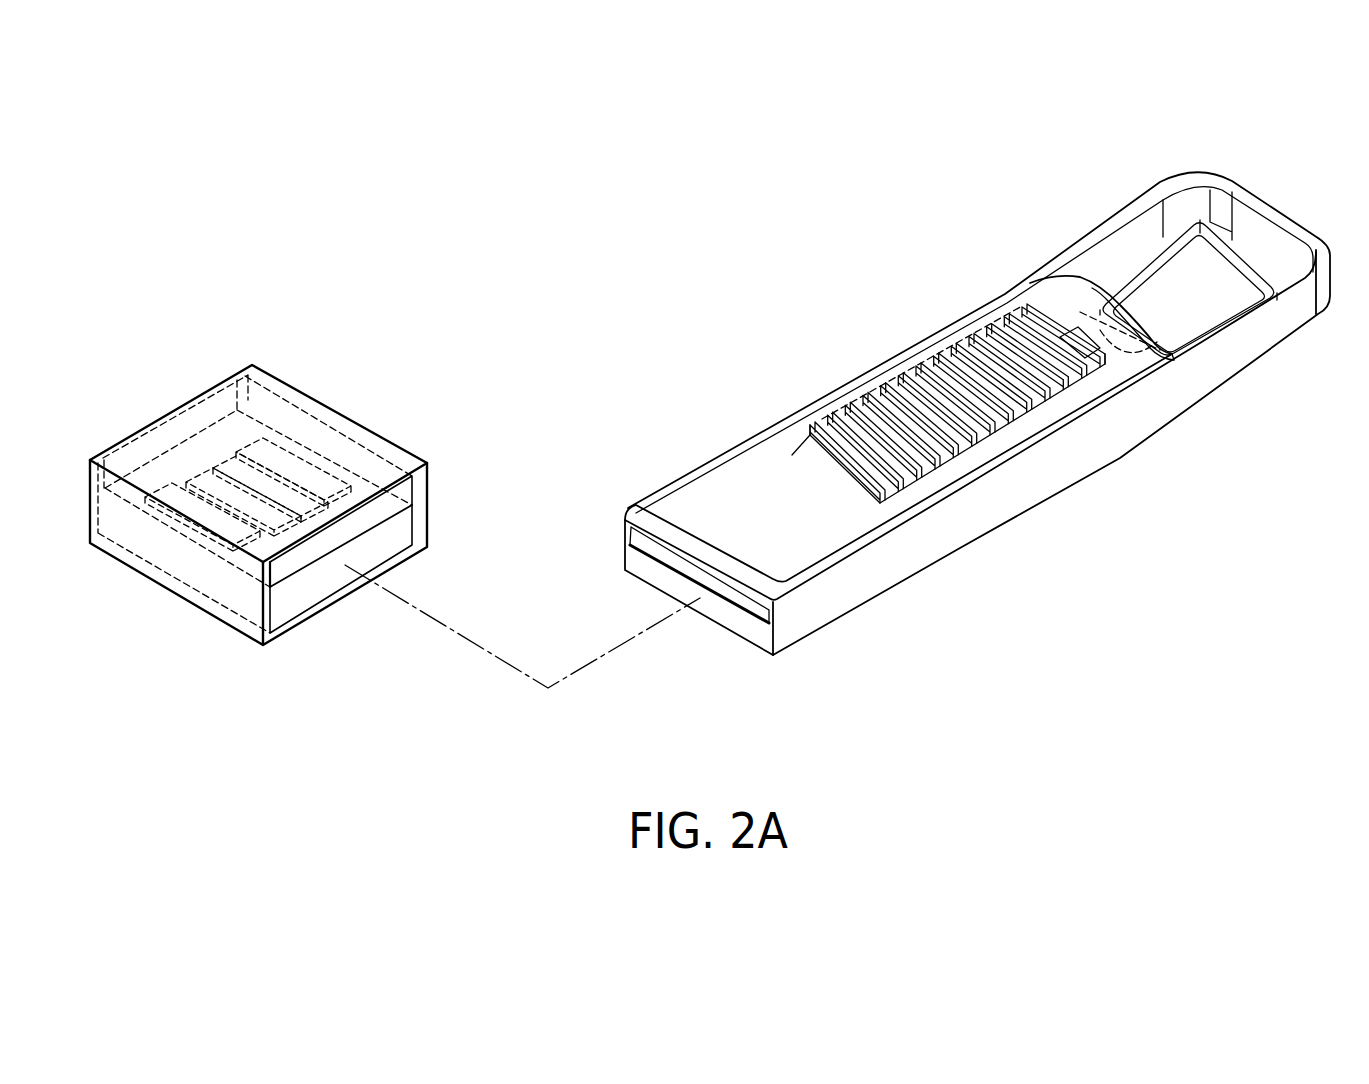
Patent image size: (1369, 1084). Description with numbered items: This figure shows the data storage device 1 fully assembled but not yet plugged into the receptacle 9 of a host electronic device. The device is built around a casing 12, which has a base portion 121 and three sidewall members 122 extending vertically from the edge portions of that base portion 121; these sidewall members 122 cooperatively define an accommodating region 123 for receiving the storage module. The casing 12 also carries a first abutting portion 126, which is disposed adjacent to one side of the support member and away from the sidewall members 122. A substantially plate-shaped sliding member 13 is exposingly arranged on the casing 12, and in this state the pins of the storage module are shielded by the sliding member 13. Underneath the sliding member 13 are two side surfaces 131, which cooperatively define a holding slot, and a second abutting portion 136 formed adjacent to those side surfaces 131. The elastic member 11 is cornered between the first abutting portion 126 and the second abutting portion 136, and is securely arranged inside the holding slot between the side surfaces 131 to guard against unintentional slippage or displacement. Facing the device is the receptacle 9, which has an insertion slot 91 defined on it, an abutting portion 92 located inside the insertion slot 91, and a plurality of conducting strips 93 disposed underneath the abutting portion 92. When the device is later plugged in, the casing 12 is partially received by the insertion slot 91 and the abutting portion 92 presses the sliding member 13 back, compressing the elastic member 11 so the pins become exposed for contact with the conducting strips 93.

The data storage device 1 is at (996, 423).
The receptacle 9 is at (285, 487).
The insertion slot 91 is at (368, 553).
The abutting portion 92 is at (310, 553).
The conducting strips 93 is at (300, 472).
The elastic member 11 is at (903, 385).
The casing 12 is at (996, 426).
The base portion 121 is at (728, 612).
The sidewall members 122 is at (1100, 262).
The accommodating region 123 is at (1208, 283).
The first abutting portion 126 is at (1158, 388).
The sliding member 13 is at (920, 389).
The side surfaces 131 is at (864, 408).
The second abutting portion 136 is at (792, 455).